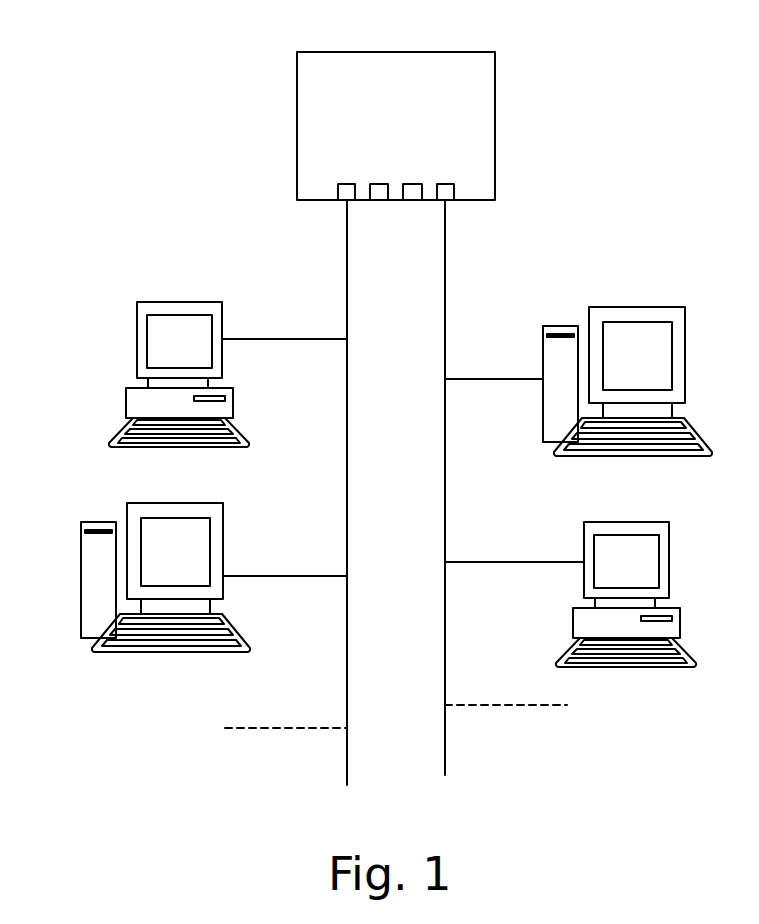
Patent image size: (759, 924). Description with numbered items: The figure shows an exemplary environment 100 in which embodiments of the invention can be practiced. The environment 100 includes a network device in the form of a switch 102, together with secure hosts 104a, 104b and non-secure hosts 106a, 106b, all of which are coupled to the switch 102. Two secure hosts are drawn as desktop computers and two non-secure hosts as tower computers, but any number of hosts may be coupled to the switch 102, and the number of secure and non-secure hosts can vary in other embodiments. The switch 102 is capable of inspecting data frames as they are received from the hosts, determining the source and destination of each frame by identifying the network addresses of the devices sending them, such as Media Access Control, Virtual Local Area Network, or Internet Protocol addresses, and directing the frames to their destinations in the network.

The environment 100 is at (118, 123).
The switch 102 is at (396, 52).
The secure host 104a is at (178, 302).
The secure host 104b is at (627, 522).
The non-secure host 106a is at (167, 503).
The non-secure host 106b is at (627, 307).